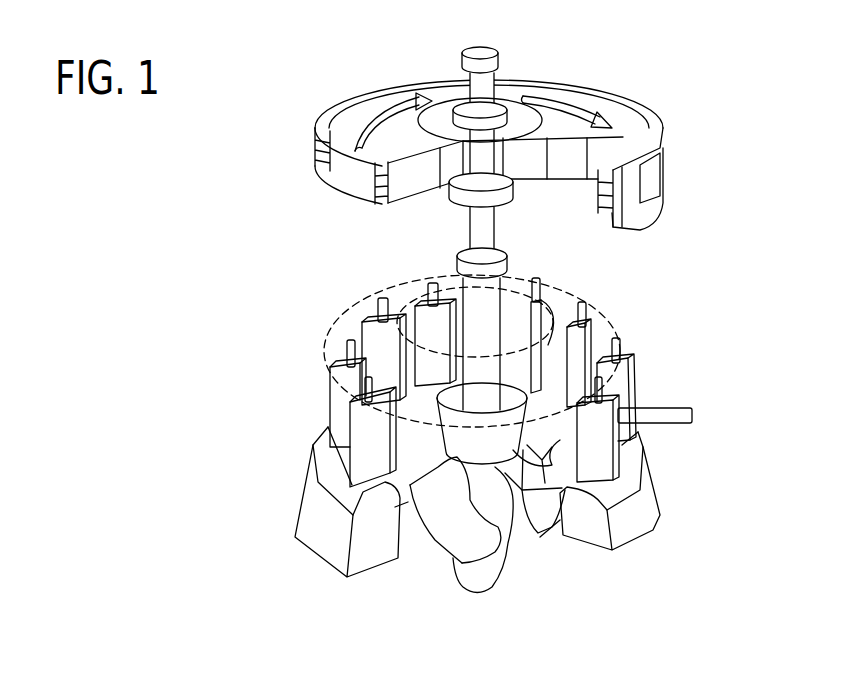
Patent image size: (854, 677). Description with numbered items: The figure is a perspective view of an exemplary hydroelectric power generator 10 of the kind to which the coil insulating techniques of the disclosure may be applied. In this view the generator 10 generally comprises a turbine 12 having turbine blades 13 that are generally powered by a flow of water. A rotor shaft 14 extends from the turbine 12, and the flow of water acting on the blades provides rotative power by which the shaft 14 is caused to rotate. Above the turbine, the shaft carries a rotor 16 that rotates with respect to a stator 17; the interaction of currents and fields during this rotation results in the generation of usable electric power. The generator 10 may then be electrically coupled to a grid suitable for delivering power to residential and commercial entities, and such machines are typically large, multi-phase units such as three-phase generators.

The hydroelectric power generator 10 is at (623, 43).
The turbine 12 is at (669, 362).
The turbine blades 13 is at (452, 520).
The rotor shaft 14 is at (477, 230).
The rotor 16 is at (355, 184).
The stator 17 is at (314, 145).